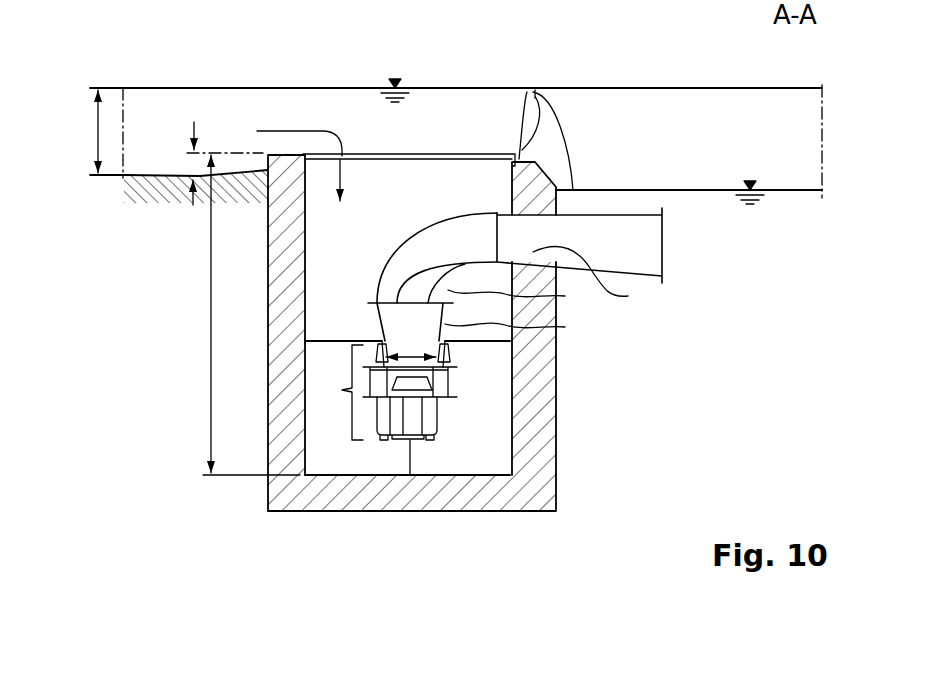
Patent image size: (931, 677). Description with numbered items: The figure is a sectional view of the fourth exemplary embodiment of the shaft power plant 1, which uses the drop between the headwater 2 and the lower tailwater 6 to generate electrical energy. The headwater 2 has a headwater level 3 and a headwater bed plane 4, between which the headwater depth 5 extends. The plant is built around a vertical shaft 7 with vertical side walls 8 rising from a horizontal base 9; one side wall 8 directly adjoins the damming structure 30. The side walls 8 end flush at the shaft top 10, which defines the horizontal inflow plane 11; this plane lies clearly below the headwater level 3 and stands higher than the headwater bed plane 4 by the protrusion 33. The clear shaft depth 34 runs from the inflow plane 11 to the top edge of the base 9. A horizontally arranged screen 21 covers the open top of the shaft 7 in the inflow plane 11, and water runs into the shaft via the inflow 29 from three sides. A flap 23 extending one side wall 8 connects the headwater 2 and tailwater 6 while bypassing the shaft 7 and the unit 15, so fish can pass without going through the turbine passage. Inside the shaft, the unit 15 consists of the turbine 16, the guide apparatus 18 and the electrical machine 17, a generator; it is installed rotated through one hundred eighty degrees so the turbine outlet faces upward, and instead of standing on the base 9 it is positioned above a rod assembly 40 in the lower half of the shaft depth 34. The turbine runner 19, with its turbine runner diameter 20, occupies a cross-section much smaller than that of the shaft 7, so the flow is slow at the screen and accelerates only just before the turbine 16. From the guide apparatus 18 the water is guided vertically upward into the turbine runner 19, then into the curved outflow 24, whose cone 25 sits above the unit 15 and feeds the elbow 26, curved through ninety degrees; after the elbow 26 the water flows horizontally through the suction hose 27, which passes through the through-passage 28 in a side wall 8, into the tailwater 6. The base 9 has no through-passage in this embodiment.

The shaft power plant 1 is at (582, 70).
The headwater 2 is at (460, 100).
The headwater level 3 is at (425, 86).
The headwater bed plane 4 is at (140, 173).
The headwater depth 5 is at (97, 130).
The tailwater 6 is at (790, 200).
The vertical shaft 7 is at (625, 352).
The side wall 8 is at (285, 273).
The base 9 is at (428, 497).
The shaft top 10 is at (287, 155).
The horizontal inflow plane 11 is at (250, 152).
The unit 15 is at (336, 392).
The turbine 16 is at (440, 352).
The electrical machine 17 is at (433, 417).
The guide apparatus 18 is at (455, 372).
The turbine runner 19 is at (417, 340).
The turbine runner diameter 20 is at (395, 348).
The screen 21 is at (363, 150).
The flap 23 is at (520, 118).
The curved outflow 24 is at (412, 228).
The cone 25 is at (520, 328).
The elbow 26 is at (522, 297).
The suction hose 27 is at (650, 247).
The through-passage 28 is at (593, 278).
The inflow 29 is at (310, 132).
The damming structure 30 is at (670, 100).
The protrusion 33 is at (194, 122).
The shaft depth 34 is at (210, 300).
The rod assembly 40 is at (412, 465).